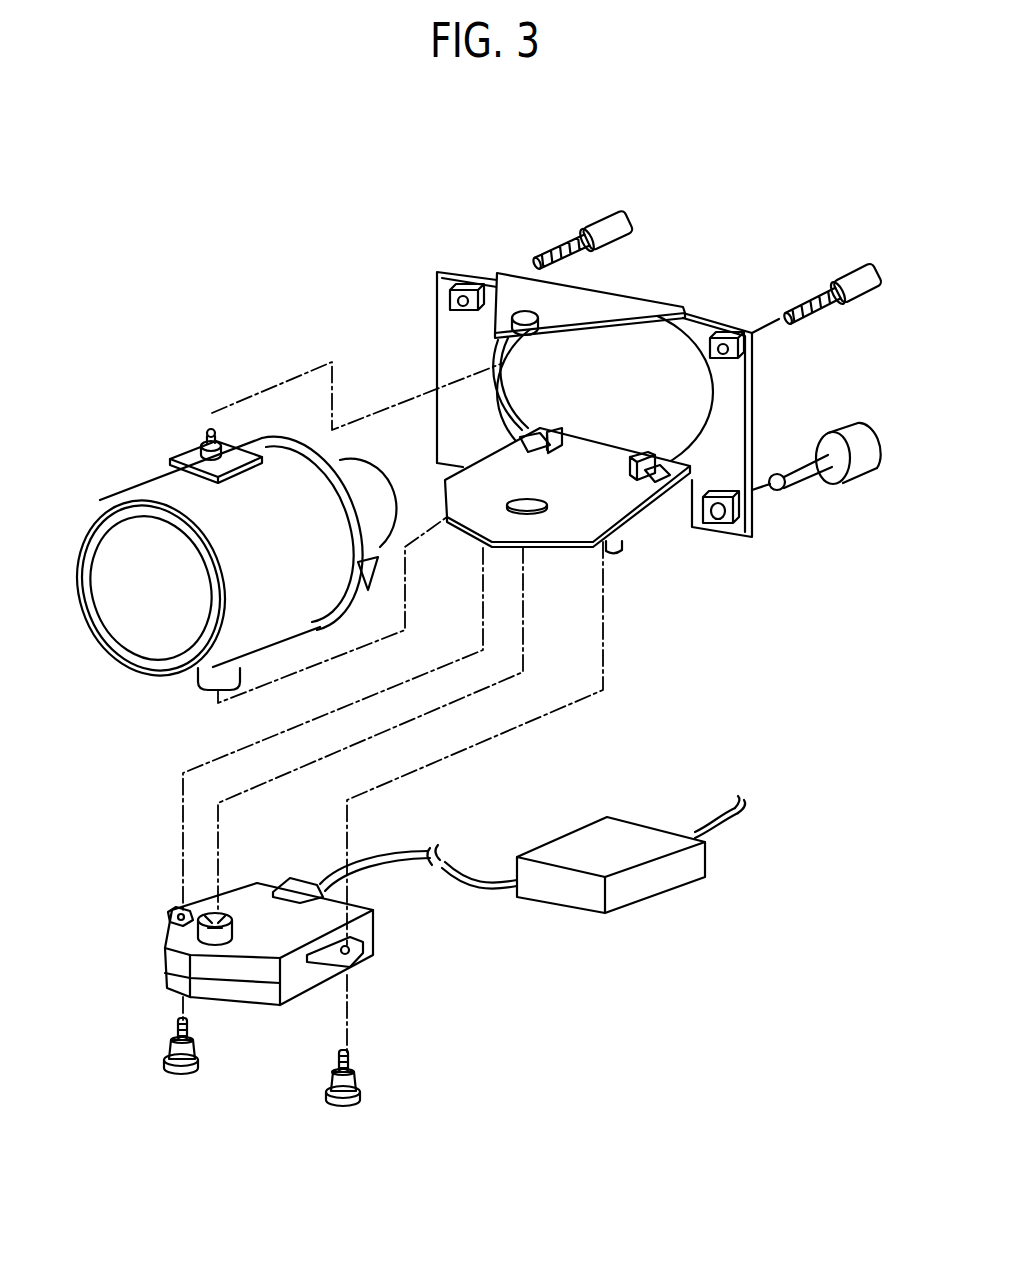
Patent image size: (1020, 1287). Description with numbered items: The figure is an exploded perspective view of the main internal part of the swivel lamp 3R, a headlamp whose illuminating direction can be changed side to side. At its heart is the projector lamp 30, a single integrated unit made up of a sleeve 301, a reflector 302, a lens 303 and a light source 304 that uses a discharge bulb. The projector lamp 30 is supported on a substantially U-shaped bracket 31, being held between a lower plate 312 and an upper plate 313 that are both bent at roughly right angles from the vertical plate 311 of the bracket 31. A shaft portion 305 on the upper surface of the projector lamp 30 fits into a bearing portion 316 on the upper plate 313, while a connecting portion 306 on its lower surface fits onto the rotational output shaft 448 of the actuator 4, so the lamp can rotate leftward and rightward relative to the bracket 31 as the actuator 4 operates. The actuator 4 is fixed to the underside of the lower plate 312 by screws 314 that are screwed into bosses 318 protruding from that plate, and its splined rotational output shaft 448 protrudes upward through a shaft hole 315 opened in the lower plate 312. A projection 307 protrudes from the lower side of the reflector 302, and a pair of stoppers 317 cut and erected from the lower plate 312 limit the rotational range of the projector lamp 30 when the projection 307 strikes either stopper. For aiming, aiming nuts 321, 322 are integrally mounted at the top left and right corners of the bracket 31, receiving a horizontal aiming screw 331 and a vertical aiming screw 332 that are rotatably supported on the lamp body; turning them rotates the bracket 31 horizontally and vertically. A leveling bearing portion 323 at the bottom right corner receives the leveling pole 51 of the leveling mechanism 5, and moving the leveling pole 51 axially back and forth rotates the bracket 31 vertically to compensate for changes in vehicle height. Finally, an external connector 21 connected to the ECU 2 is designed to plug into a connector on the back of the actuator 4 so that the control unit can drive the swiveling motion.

The swivel lamp 3R is at (506, 138).
The projector lamp 30 is at (110, 484).
The sleeve 301 is at (275, 622).
The reflector 302 is at (372, 578).
The lens 303 is at (113, 625).
The light source 304 is at (389, 488).
The shaft portion 305 is at (206, 436).
The connecting portion 306 is at (208, 680).
The projection 307 is at (383, 572).
The bracket 31 is at (434, 265).
The vertical plate 311 is at (748, 405).
The lower plate 312 is at (627, 497).
The upper plate 313 is at (625, 303).
The screws 314 is at (198, 1066).
The shaft hole 315 is at (541, 513).
The bearing portion 316 is at (502, 320).
The stoppers 317 is at (648, 455).
The bosses 318 is at (623, 556).
The aiming nut 321 is at (469, 295).
The aiming nut 322 is at (723, 343).
The leveling bearing portion 323 is at (718, 525).
The horizontal aiming screw 331 is at (631, 222).
The vertical aiming screw 332 is at (858, 273).
The leveling mechanism 5 is at (865, 472).
The leveling pole 51 is at (778, 492).
The ECU 2 is at (640, 884).
The external connector 21 is at (302, 880).
The actuator 4 is at (380, 920).
The rotational output shaft 448 is at (200, 936).